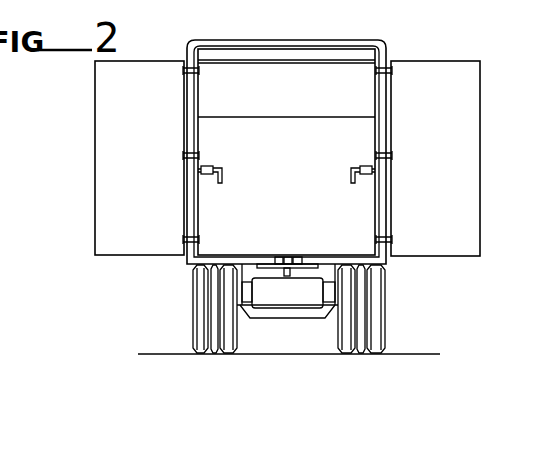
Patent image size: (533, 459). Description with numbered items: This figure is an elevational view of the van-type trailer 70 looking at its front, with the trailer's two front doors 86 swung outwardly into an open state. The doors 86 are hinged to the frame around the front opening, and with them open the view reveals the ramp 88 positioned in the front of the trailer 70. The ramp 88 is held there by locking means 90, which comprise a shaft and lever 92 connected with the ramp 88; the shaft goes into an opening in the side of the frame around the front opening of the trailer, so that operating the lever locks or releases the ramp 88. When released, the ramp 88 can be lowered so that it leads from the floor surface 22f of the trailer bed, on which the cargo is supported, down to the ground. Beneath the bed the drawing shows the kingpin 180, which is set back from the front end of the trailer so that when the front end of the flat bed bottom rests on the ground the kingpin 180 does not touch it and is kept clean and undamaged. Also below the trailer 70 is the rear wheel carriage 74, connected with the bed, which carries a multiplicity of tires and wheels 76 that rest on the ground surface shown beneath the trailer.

The van-type trailer 70 is at (384, 43).
The front doors 86 is at (163, 75).
The ramp 88 is at (305, 125).
The locking means 90 is at (211, 165).
The shaft and lever 92 is at (223, 178).
The floor surface 22f is at (308, 256).
The kingpin 180 is at (286, 277).
The rear wheel carriage 74 is at (311, 320).
The tires and wheels 76 is at (347, 352).